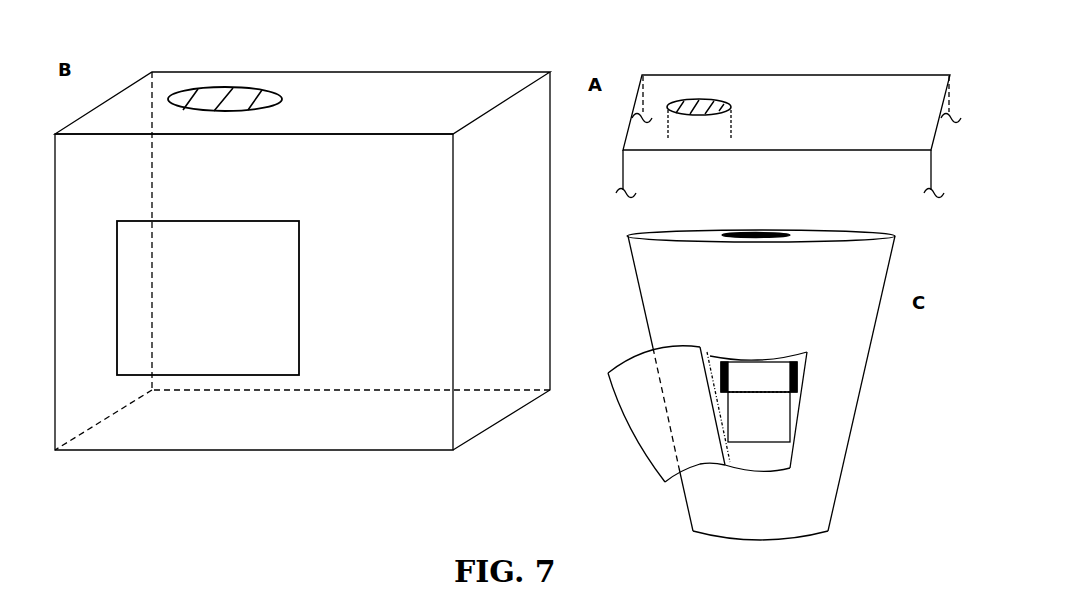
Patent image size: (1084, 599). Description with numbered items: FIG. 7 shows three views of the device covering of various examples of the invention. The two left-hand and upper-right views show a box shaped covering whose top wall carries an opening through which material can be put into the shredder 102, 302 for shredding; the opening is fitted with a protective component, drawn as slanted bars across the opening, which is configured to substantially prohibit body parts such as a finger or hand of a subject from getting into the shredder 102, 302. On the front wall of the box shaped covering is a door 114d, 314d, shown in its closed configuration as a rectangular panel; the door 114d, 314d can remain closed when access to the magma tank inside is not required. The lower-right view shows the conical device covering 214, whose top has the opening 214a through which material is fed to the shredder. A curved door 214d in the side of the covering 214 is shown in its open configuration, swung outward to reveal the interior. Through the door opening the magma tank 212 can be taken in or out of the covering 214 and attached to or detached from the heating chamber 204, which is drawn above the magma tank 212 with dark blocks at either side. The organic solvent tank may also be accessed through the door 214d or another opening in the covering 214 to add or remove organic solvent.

The door 114d is at (266, 298).
The door 314d is at (299, 319).
The shredder 102 is at (703, 124).
The shredder 302 is at (703, 124).
The device covering 214 is at (772, 385).
The opening 214a is at (777, 221).
The door 214d is at (645, 441).
The heating chamber 204 is at (759, 377).
The magma tank 212 is at (759, 417).